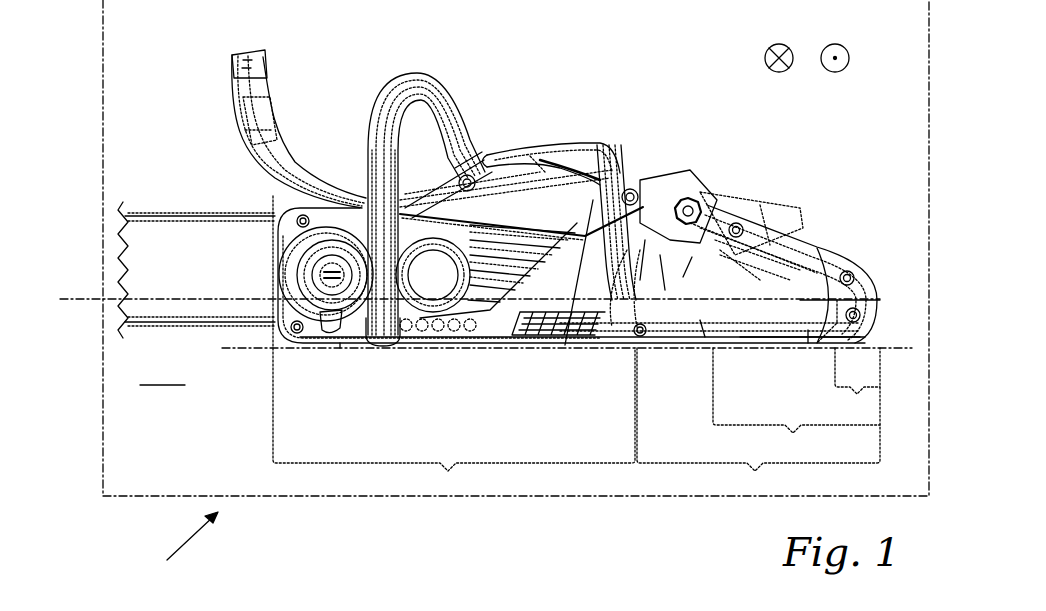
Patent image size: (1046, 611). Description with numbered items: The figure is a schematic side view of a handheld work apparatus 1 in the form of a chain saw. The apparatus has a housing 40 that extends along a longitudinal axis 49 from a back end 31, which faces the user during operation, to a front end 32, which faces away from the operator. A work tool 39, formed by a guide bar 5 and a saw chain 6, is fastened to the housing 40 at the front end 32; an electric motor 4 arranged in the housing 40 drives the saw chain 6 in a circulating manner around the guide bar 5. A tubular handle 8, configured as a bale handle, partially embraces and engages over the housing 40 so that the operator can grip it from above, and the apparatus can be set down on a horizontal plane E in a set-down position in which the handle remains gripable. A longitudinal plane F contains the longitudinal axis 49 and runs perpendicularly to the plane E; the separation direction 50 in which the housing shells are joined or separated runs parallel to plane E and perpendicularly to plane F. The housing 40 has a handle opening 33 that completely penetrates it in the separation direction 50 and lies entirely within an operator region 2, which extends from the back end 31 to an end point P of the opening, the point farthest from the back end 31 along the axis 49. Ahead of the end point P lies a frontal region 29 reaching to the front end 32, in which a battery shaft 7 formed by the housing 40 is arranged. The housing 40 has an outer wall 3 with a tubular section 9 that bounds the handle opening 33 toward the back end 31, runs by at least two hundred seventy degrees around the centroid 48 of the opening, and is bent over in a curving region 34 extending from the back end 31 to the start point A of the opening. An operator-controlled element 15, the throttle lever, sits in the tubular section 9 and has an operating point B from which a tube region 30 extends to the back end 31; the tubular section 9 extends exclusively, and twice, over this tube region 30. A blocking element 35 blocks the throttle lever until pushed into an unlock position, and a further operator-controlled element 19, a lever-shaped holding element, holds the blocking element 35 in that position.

The handheld work apparatus 1 is at (188, 552).
The operator region 2 is at (758, 422).
The outer wall 3 is at (823, 246).
The electric motor 4 is at (467, 313).
The guide bar 5 is at (203, 311).
The saw chain 6 is at (172, 323).
The battery shaft 7 is at (598, 145).
The tubular handle 8 is at (402, 93).
The tubular section 9 is at (860, 268).
The operator-controlled element 15 is at (676, 279).
The further operator-controlled element 19 is at (773, 208).
The frontal region 29 is at (567, 346).
The tube region 30 is at (796, 404).
The back end 31 is at (882, 298).
The front end 32 is at (273, 273).
The handle opening 33 is at (705, 313).
The curving region 34 is at (857, 385).
The blocking element 35 is at (678, 228).
The work tool 39 is at (162, 396).
The housing 40 is at (752, 345).
The centroid 48 is at (743, 299).
The longitudinal axis 49 is at (78, 296).
The separation direction 50 is at (787, 72).
The start point A is at (808, 330).
The operating point B is at (696, 196).
The horizontal plane E is at (345, 350).
The longitudinal plane F is at (410, 497).
The end point P is at (642, 208).